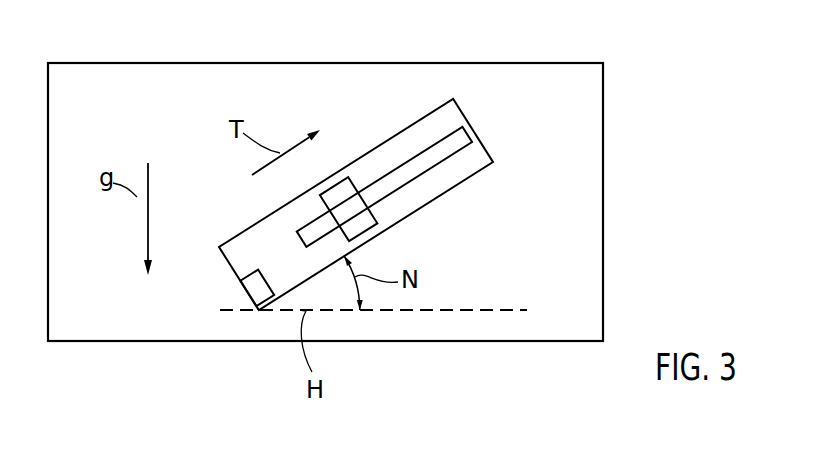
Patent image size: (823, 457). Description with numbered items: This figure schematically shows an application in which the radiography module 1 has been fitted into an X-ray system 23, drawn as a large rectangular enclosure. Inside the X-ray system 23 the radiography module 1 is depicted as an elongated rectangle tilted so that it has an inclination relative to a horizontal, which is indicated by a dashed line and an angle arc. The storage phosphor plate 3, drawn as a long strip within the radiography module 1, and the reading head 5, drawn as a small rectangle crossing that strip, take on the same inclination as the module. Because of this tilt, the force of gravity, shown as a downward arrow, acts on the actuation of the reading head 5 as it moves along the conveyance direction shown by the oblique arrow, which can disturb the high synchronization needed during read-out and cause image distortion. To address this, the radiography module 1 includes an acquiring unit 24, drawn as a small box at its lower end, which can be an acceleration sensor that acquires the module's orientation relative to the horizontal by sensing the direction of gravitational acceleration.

The radiography module 1 is at (478, 152).
The storage phosphor plate 3 is at (440, 153).
The reading head 5 is at (368, 223).
The X-ray system 23 is at (588, 222).
The acquiring unit 24 is at (252, 287).